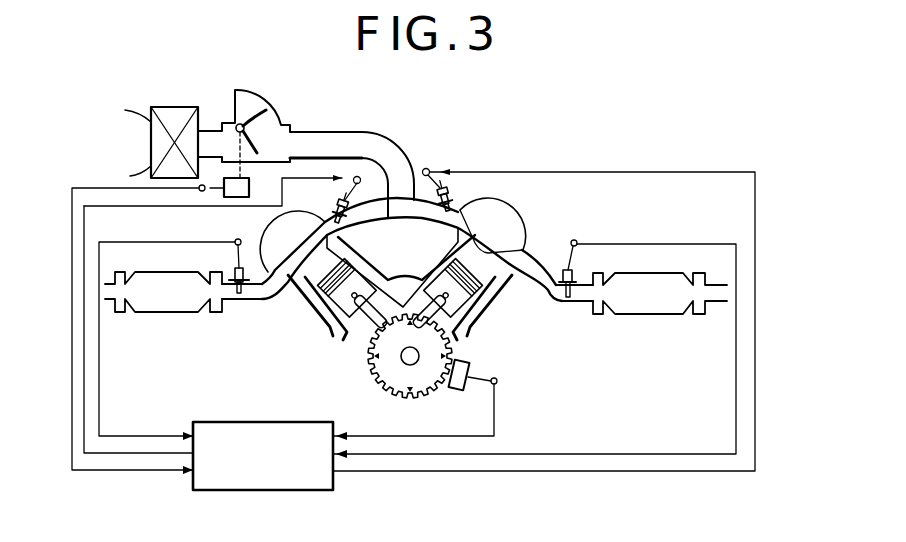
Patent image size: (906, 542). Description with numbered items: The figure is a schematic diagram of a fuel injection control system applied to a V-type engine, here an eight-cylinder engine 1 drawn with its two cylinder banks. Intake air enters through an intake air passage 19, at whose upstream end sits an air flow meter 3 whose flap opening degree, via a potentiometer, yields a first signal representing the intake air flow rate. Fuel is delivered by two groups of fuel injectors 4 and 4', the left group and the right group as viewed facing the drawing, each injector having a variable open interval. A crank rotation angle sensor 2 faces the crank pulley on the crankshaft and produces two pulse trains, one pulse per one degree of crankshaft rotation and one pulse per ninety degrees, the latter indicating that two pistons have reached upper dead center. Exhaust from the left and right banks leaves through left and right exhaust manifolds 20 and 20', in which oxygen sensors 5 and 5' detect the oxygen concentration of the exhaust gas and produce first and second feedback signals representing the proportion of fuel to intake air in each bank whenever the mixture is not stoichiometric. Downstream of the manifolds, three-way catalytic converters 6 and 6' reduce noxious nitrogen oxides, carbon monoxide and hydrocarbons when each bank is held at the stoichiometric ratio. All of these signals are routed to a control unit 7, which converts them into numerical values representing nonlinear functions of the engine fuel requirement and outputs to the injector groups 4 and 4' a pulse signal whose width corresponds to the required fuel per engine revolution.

The V-8 engine 1 is at (494, 204).
The crank rotation angle sensor 2 is at (470, 370).
The air flow meter 3 is at (274, 111).
The fuel injectors (left group) 4 is at (222, 200).
The fuel injectors (right group) 4' is at (544, 299).
The oxygen sensor 5 is at (174, 339).
The oxygen sensor 5' is at (534, 339).
The three-way catalytic converter 6 is at (163, 308).
The three-way catalytic converter 6' is at (660, 313).
The control unit 7 is at (273, 470).
The intake air passage 19 is at (325, 145).
The left exhaust manifold 20 is at (250, 314).
The right exhaust manifold 20' is at (572, 311).